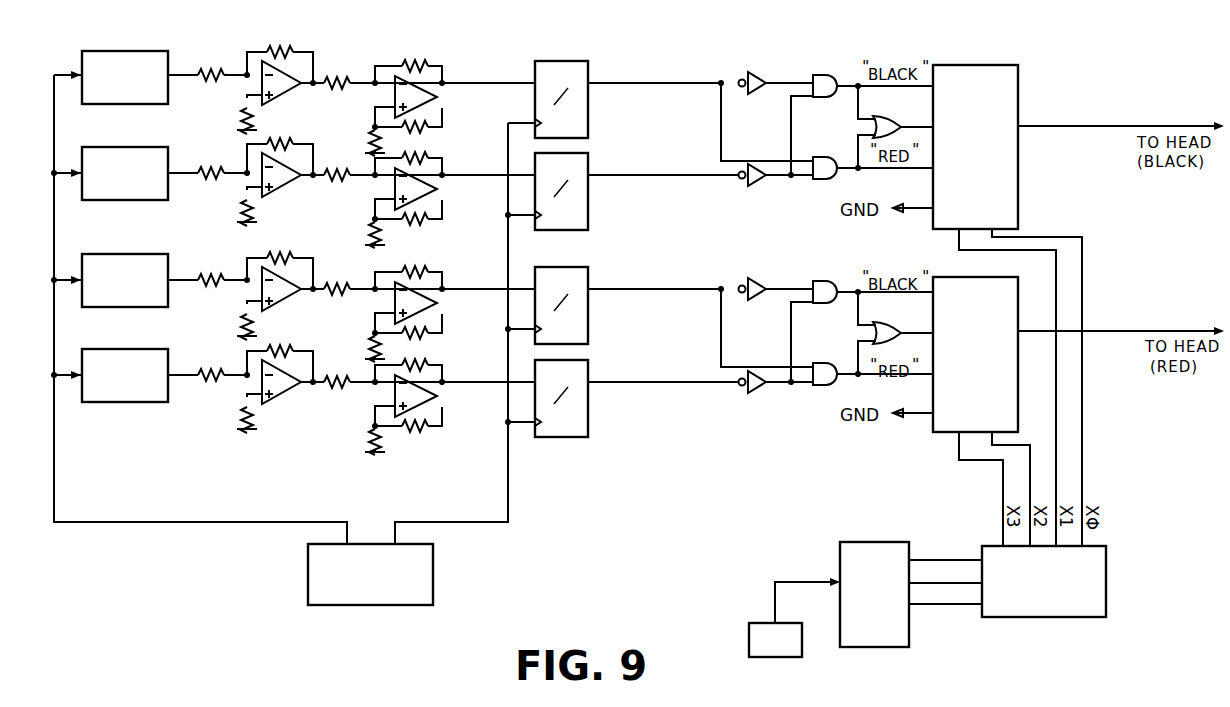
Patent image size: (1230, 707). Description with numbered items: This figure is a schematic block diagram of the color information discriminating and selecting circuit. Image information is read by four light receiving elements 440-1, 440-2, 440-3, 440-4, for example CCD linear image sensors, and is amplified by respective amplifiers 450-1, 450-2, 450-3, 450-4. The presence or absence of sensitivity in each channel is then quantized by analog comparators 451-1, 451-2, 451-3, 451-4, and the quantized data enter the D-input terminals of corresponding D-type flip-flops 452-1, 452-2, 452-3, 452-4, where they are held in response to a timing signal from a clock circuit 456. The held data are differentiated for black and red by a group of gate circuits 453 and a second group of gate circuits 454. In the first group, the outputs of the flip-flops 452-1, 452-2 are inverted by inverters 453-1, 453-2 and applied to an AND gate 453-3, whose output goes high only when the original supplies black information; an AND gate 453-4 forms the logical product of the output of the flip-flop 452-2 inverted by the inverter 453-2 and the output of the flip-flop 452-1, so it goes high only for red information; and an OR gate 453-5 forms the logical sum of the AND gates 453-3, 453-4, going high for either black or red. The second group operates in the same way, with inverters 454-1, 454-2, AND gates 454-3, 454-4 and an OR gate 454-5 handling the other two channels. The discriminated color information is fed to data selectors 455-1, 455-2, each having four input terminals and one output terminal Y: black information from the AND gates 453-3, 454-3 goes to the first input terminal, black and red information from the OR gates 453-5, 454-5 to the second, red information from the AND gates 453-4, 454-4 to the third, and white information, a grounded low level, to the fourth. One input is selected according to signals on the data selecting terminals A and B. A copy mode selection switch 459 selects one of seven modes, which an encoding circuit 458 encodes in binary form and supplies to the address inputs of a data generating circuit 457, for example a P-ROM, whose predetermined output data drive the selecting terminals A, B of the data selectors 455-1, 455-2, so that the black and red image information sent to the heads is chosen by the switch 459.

The light receiving element 440-1 is at (113, 51).
The light receiving element 440-2 is at (115, 147).
The light receiving element 440-3 is at (115, 254).
The light receiving element 440-4 is at (125, 402).
The amplifier 450-1 is at (285, 92).
The amplifier 450-2 is at (285, 185).
The amplifier 450-3 is at (285, 298).
The amplifier 450-4 is at (285, 391).
The analog comparator 451-1 is at (432, 92).
The analog comparator 451-2 is at (432, 188).
The analog comparator 451-3 is at (432, 300).
The analog comparator 451-4 is at (432, 393).
The D-type flip-flop 452-1 is at (588, 104).
The D-type flip-flop 452-2 is at (588, 200).
The D-type flip-flop 452-3 is at (588, 312).
The D-type flip-flop 452-4 is at (588, 408).
The group of gate circuits 453 is at (908, 55).
The inverter 453-1 is at (762, 88).
The inverter 453-2 is at (755, 187).
The AND gate 453-3 is at (838, 75).
The AND gate 453-4 is at (838, 179).
The OR gate 453-5 is at (905, 108).
The group of gate circuits 454 is at (888, 430).
The inverter 454-1 is at (762, 294).
The inverter 454-2 is at (755, 394).
The AND gate 454-3 is at (832, 285).
The AND gate 454-4 is at (830, 363).
The OR gate 454-5 is at (905, 313).
The data selector 455-1 is at (1018, 163).
The data selector 455-2 is at (933, 434).
The clock circuit 456 is at (368, 590).
The data generating circuit 457 is at (1050, 617).
The encoding circuit 458 is at (882, 542).
The copy mode selection switch 459 is at (749, 627).